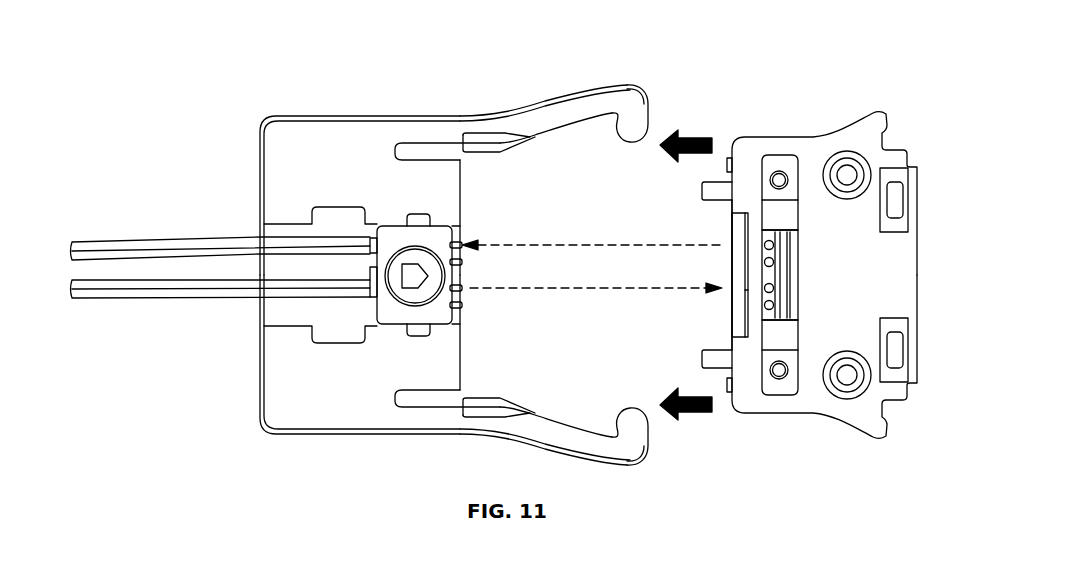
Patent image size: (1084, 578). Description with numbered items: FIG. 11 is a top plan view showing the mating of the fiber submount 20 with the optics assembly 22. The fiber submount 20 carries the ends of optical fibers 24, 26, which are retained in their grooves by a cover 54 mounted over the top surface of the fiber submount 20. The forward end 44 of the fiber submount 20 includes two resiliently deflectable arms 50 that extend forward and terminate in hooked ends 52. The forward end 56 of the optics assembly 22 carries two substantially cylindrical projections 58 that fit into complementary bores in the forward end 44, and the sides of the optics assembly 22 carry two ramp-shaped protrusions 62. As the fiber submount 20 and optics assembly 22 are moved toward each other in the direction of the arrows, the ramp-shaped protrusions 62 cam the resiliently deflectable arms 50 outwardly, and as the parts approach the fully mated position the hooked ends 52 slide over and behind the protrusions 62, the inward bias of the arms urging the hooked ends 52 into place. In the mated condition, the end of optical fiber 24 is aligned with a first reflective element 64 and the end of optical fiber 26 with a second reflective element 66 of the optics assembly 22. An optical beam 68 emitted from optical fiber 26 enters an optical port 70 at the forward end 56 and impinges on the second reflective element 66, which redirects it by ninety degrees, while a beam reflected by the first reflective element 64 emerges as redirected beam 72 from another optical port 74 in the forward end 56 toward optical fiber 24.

The fiber submount 20 is at (391, 80).
The optics assembly 22 is at (810, 72).
The optical fiber 24 is at (462, 244).
The optical fiber 26 is at (462, 290).
The forward end 44 is at (463, 187).
The resiliently deflectable arms 50 is at (566, 101).
The hooked ends 52 is at (648, 108).
The cover 54 is at (393, 322).
The forward end 56 is at (732, 262).
The substantially cylindrical projections 58 is at (703, 186).
The ramp-shaped protrusions 62 is at (851, 118).
The first reflective element 64 is at (790, 245).
The second reflective element 66 is at (772, 290).
The optical beam 68 is at (570, 292).
The optical port 70 is at (745, 295).
The redirected beam 72 is at (578, 243).
The optical port 74 is at (745, 244).